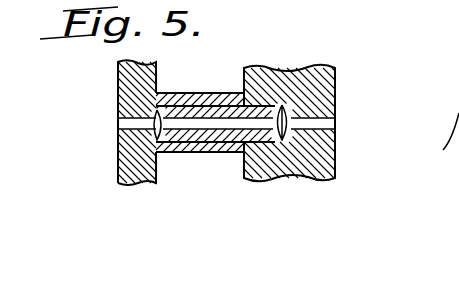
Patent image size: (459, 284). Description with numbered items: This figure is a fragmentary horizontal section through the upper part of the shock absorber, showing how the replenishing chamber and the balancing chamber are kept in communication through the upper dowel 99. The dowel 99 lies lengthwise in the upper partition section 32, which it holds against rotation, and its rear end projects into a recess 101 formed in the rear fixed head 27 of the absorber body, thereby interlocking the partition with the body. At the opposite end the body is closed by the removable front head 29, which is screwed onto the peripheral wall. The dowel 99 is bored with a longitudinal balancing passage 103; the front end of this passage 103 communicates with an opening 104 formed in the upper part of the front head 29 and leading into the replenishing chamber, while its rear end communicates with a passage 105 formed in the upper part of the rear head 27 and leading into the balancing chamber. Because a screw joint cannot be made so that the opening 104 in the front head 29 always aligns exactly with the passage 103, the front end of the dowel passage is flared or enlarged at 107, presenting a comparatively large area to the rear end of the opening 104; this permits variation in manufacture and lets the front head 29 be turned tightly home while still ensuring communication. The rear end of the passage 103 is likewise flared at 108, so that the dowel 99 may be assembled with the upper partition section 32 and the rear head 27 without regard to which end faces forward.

The rear fixed head 27 is at (305, 178).
The removable front head 29 is at (125, 183).
The upper partition section 32 is at (189, 100).
The upper dowel 99 is at (228, 137).
The recess 101 is at (257, 103).
The longitudinal balancing passage 103 is at (211, 126).
The opening 104 is at (127, 123).
The passage 105 is at (326, 128).
The flared front end of passage 107 is at (158, 134).
The flared rear end of passage 108 is at (266, 136).